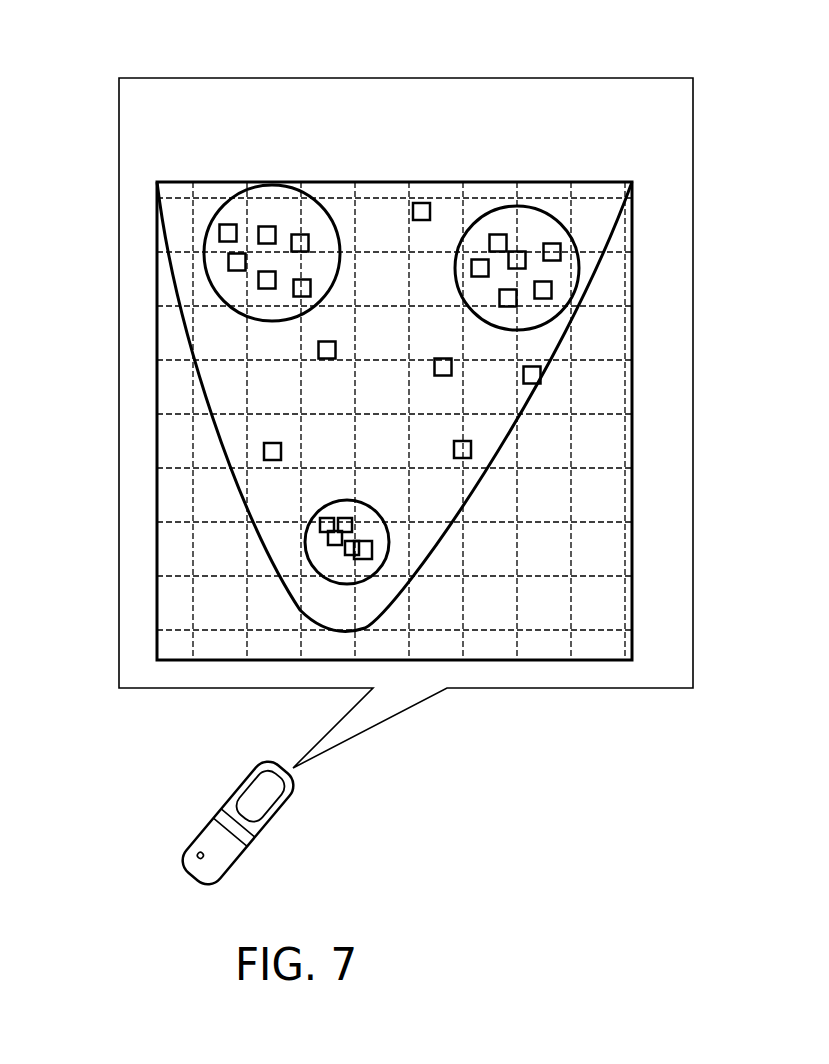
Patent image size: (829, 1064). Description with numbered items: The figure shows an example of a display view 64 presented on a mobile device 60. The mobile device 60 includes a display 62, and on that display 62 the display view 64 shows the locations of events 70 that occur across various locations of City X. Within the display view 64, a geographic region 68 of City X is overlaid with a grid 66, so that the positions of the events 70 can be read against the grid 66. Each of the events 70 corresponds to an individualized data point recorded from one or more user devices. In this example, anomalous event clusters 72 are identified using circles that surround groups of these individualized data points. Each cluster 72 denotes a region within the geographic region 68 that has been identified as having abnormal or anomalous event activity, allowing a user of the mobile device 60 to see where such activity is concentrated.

The mobile device 60 is at (185, 862).
The display 62 is at (262, 785).
The display view 64 is at (146, 80).
The grid 66 is at (593, 468).
The geographic region 68 is at (480, 513).
The events 70 is at (300, 298).
The anomalous event clusters 72 is at (270, 187).